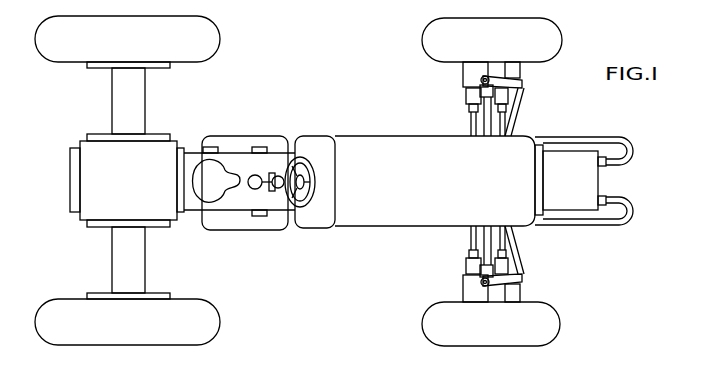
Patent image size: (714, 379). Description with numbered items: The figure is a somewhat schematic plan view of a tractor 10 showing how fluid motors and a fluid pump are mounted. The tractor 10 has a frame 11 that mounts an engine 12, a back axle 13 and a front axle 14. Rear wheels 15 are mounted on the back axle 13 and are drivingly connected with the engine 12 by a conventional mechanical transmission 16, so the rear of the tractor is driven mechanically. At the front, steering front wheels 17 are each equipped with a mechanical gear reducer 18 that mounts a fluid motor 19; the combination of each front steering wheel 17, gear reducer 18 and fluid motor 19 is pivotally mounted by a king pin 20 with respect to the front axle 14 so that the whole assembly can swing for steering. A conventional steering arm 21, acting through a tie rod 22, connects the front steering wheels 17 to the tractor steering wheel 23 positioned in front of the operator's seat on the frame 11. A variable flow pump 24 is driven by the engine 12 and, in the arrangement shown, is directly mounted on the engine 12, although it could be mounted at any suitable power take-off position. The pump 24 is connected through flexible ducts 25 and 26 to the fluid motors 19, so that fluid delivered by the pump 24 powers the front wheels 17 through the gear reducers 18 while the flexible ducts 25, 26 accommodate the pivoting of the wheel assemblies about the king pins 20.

The tractor 10 is at (316, 125).
The frame 11 is at (252, 160).
The engine 12 is at (383, 224).
The back axle 13 is at (117, 99).
The front axle 14 is at (487, 128).
The rear wheels 15 is at (52, 26).
The mechanical transmission 16 is at (83, 168).
The steering front wheels 17 is at (551, 32).
The mechanical gear reducer 18 is at (465, 72).
The fluid motors 19 is at (470, 99).
The king pins 20 is at (484, 76).
The steering arm 21 is at (510, 80).
The tie rod 22 is at (519, 110).
The tractor steering wheel 23 is at (311, 167).
The variable flow pump 24 is at (598, 181).
The flexible duct 25 is at (613, 140).
The flexible duct 26 is at (614, 224).